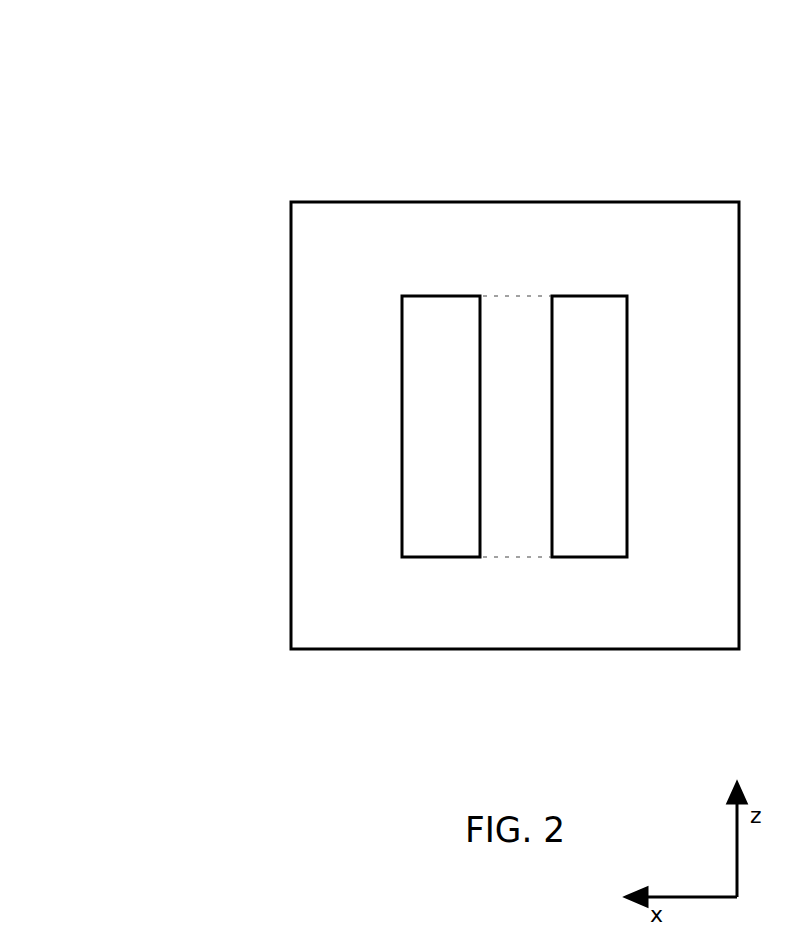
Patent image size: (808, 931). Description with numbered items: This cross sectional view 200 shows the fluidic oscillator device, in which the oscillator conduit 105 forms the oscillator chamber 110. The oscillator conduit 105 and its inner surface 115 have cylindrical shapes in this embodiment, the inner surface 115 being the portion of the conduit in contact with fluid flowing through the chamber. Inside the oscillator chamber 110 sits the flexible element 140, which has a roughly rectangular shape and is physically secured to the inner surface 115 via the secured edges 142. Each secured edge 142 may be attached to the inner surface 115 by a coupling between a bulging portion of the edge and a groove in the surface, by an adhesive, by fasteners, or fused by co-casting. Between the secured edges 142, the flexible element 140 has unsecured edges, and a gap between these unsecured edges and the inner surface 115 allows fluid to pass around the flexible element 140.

The oscillator assembly 200 is at (88, 26).
The oscillator conduit 105 is at (437, 278).
The oscillator chamber 110 is at (578, 410).
The inner surface 115 is at (402, 372).
The flexible element 140 is at (520, 348).
The secured edges 142 is at (513, 562).